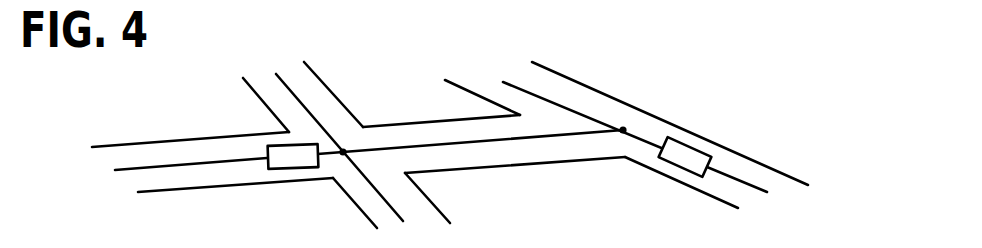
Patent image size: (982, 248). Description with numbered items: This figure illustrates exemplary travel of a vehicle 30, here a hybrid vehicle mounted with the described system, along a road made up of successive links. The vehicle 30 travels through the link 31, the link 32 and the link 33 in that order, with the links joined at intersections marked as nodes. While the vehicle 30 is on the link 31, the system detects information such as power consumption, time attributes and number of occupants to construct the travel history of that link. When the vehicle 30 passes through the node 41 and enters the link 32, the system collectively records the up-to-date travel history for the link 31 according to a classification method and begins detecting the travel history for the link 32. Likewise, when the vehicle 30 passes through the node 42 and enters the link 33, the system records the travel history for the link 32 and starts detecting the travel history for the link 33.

The vehicle 30 is at (273, 145).
The link 31 is at (183, 165).
The link 32 is at (465, 144).
The link 33 is at (733, 176).
The node 41 is at (343, 152).
The node 42 is at (623, 130).